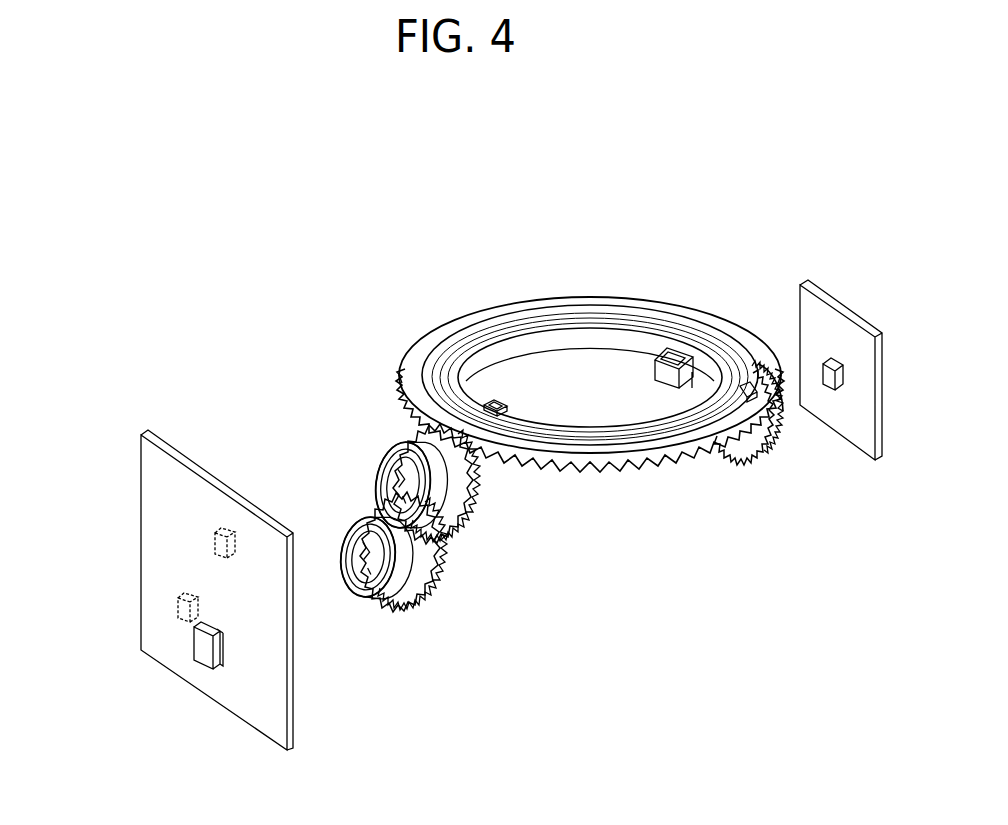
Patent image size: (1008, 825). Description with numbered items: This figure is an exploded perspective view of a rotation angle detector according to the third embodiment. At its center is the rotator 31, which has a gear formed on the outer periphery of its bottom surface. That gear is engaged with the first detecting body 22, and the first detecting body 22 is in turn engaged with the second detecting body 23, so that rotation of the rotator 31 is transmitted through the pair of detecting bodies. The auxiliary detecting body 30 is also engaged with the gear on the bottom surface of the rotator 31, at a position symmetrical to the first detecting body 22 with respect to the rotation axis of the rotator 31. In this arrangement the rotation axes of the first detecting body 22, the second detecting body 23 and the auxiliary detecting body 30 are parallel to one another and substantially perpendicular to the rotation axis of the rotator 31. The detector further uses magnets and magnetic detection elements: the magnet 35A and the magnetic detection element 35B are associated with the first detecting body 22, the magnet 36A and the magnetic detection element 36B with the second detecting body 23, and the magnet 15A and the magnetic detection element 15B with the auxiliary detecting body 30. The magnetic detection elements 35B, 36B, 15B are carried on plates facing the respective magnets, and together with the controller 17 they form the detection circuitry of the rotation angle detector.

The rotator 31 is at (455, 318).
The first detecting body 22 is at (474, 520).
The second detecting body 23 is at (437, 602).
The auxiliary detecting body 30 is at (753, 467).
The magnet 15A is at (742, 385).
The magnetic detection element 15B is at (824, 359).
The magnet 35A is at (385, 461).
The magnetic detection element 35B is at (213, 542).
The magnet 36A is at (360, 545).
The magnetic detection element 36B is at (183, 607).
The controller 17 is at (205, 653).